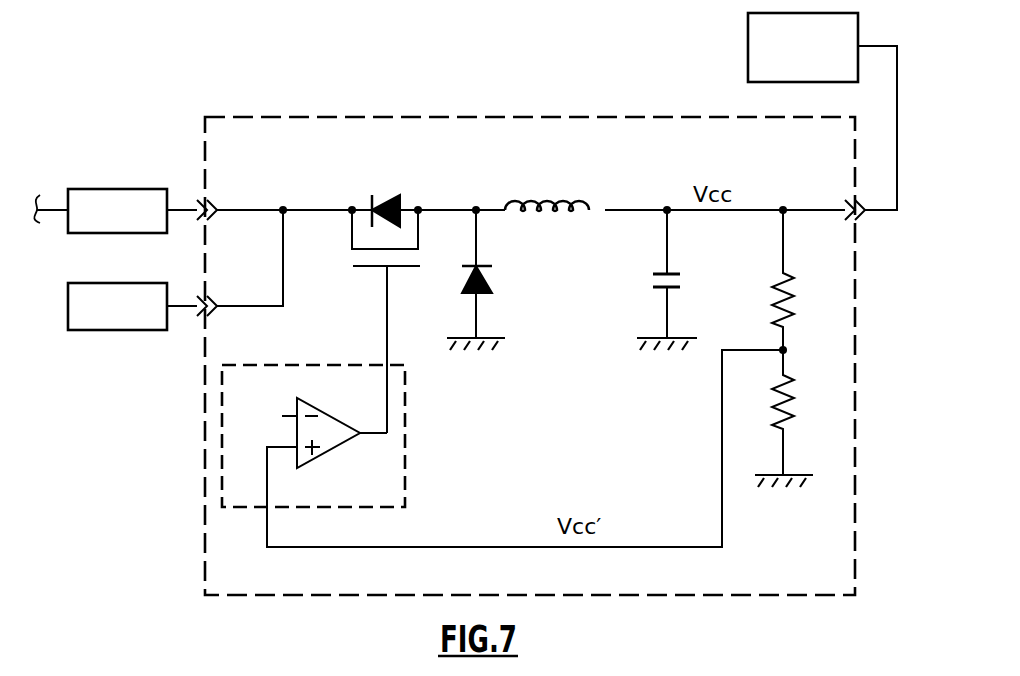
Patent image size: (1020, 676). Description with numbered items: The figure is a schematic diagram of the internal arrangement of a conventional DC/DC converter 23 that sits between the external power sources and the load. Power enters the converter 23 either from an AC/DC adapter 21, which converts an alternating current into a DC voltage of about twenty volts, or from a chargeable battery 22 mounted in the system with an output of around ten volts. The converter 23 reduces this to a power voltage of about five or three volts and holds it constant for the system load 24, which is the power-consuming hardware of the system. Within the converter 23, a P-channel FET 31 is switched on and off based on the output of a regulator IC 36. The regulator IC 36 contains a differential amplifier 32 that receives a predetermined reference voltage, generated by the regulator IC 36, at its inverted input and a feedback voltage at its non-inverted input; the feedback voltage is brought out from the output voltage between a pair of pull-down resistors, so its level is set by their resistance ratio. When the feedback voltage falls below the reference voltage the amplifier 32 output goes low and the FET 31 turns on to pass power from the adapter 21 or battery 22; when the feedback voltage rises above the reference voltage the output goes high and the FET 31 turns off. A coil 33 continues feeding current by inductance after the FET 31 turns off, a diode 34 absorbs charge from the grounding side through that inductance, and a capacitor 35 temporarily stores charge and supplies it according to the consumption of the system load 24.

The AC/DC adapter 21 is at (128, 188).
The battery 22 is at (128, 283).
The DC/DC converter 23 is at (424, 99).
The system load 24 is at (748, 35).
The P-channel FET 31 is at (405, 188).
The differential amplifier 32 is at (305, 400).
The coil 33 is at (563, 188).
The diode 34 is at (470, 290).
The capacitor 35 is at (665, 290).
The regulator IC 36 is at (405, 452).